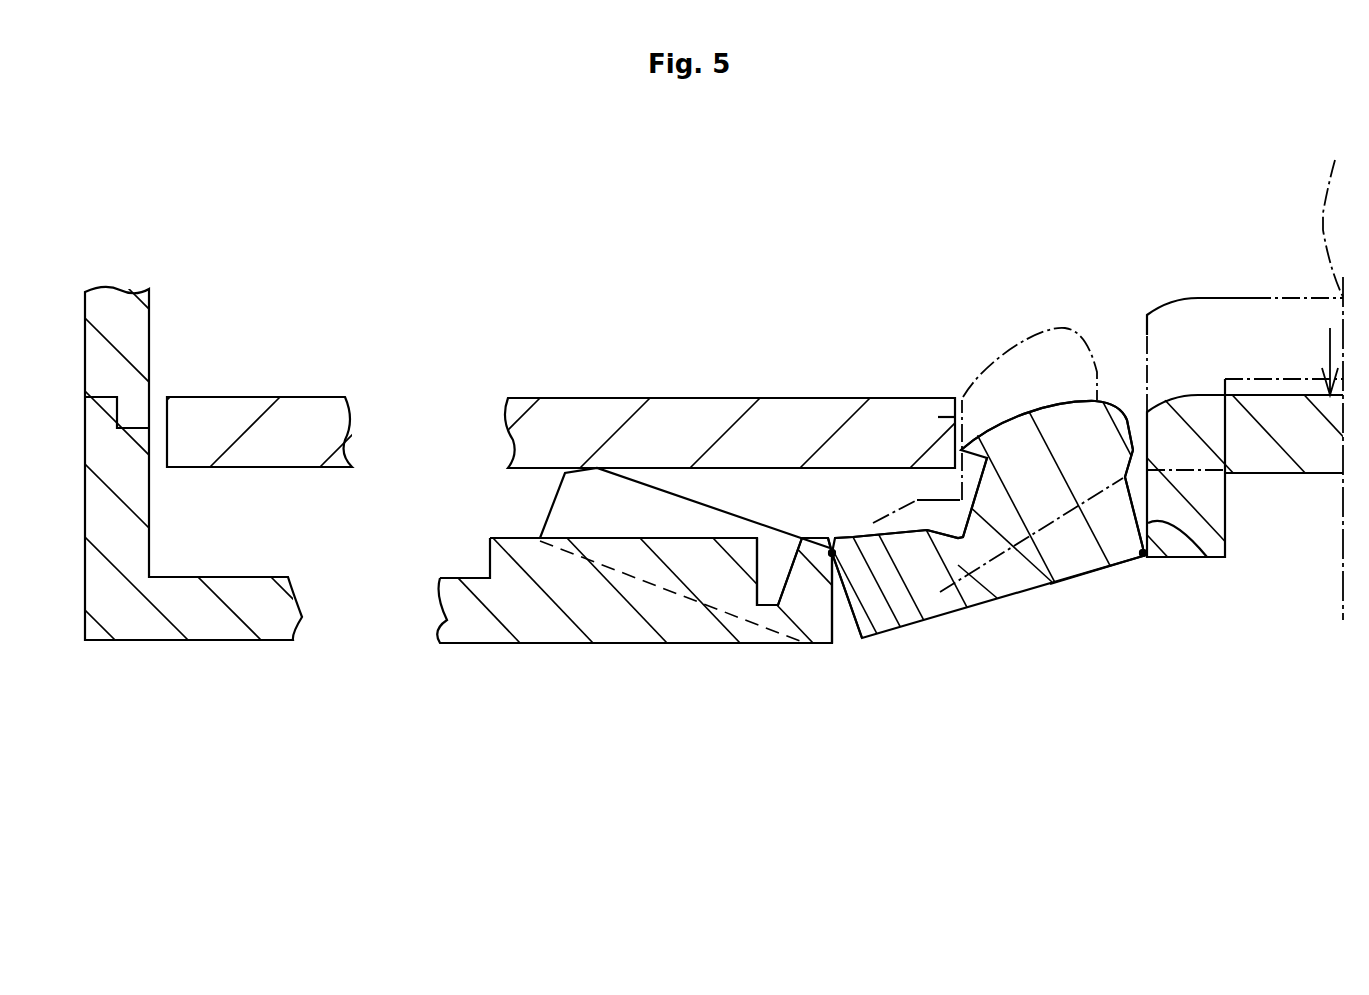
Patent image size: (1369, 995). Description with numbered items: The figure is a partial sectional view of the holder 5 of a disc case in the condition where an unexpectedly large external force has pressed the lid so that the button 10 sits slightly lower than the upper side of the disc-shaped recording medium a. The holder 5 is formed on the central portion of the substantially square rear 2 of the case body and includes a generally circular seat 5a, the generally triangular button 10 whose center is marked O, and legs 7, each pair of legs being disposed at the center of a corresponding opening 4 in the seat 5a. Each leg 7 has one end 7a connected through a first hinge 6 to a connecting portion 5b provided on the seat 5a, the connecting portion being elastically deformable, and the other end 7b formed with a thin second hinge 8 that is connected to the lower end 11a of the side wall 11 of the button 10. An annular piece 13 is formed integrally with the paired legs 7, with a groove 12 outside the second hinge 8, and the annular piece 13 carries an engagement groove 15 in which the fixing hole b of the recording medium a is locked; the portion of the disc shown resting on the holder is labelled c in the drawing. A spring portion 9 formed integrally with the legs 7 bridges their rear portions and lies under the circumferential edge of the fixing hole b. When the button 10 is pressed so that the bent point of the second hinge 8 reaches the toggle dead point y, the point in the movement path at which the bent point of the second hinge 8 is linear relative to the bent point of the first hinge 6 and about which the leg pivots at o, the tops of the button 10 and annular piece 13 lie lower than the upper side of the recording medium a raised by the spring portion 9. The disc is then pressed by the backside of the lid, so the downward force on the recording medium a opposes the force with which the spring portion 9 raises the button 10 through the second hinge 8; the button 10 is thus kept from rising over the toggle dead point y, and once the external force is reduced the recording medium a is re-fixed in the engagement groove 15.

The rear 2 is at (491, 535).
The opening 4 is at (835, 624).
The holder 5 is at (992, 464).
The seat 5a is at (490, 548).
The connecting portion 5b is at (771, 603).
The first hinge 6 is at (877, 567).
The leg 7 is at (1093, 573).
The one end of leg 7a is at (866, 636).
The other end of leg 7b is at (1122, 555).
The second hinge 8 is at (1167, 540).
The spring portion 9 is at (585, 483).
The button 10 is at (1315, 462).
The side wall 11 is at (1187, 493).
The lower end of side wall 11a is at (1163, 540).
The groove 12 is at (1137, 490).
The annular piece 13 is at (1055, 423).
The engagement groove 15 is at (962, 528).
The disc-shaped recording medium a is at (508, 408).
The fixing hole b is at (964, 380).
The plate segment c is at (183, 453).
The first pivot point o is at (831, 550).
The toggle dead point y is at (1146, 556).
The center of the triangular button O is at (1333, 371).